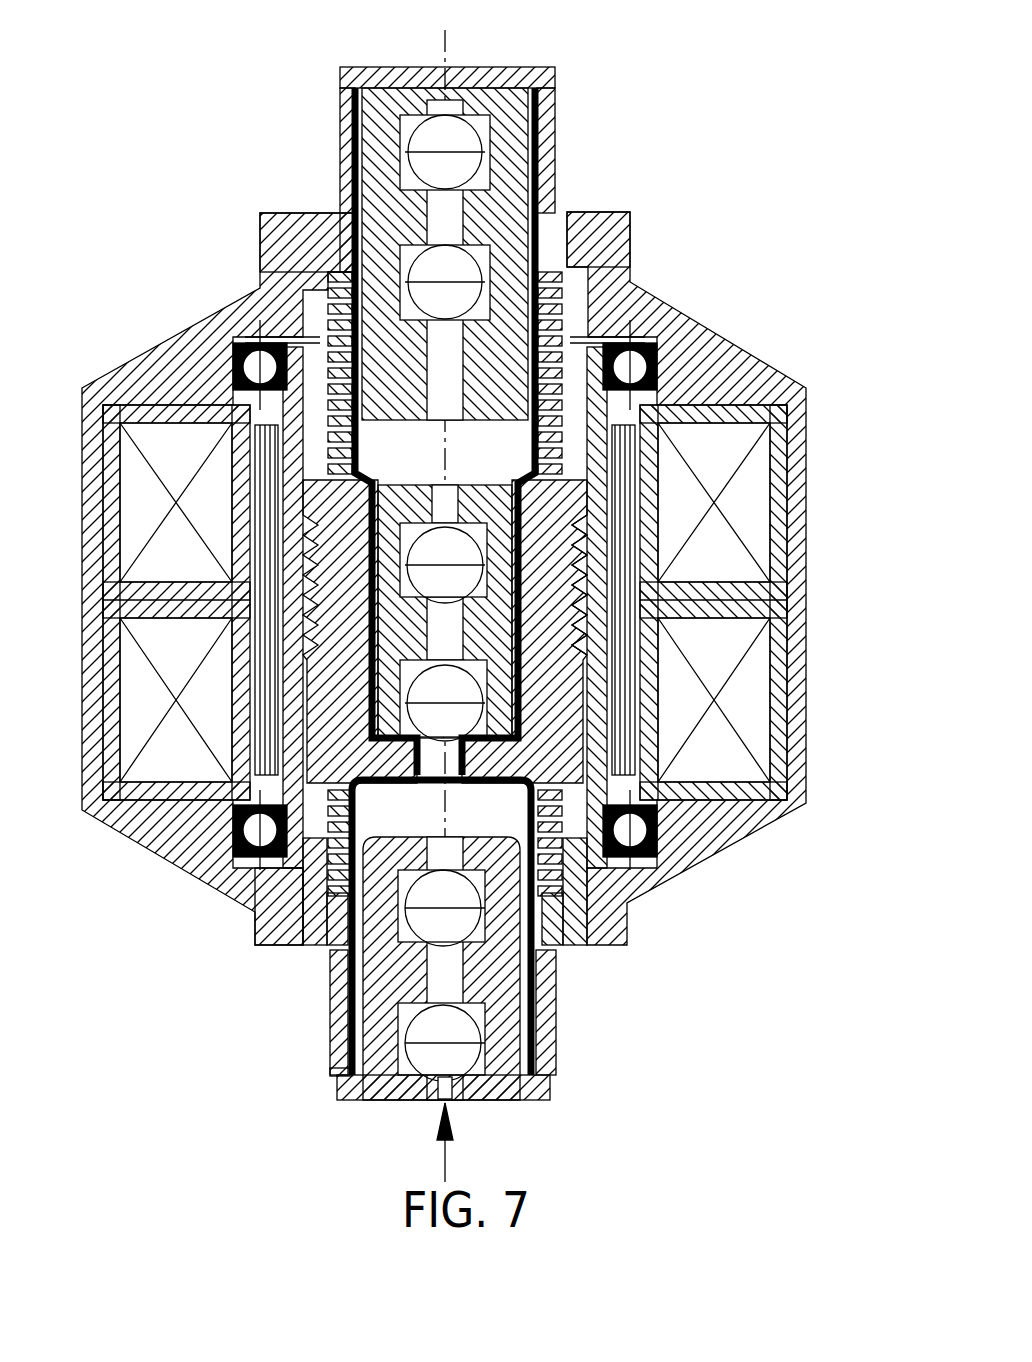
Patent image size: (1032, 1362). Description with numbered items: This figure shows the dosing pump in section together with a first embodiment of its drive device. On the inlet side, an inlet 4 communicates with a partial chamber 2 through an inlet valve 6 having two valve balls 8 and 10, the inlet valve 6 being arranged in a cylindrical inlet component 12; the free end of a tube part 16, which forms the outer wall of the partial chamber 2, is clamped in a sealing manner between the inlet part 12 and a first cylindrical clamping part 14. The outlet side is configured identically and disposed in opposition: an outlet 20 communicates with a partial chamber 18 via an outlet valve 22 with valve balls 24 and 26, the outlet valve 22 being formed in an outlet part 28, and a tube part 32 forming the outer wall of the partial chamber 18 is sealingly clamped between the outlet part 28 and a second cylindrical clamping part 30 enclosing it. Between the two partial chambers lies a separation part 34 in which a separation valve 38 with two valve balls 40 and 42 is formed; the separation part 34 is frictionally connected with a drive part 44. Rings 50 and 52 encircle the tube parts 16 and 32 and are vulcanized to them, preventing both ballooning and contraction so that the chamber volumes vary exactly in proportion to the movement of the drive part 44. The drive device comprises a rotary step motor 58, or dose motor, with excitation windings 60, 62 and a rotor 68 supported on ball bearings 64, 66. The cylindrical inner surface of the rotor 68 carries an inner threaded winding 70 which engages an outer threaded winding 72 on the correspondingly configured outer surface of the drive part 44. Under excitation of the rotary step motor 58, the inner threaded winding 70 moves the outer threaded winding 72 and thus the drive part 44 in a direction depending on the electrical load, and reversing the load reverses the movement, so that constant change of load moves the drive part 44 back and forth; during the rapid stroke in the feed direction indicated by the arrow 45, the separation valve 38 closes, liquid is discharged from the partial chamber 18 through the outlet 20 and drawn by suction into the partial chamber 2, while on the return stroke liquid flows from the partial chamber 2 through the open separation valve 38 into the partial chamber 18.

The partial chamber 2 is at (440, 795).
The inlet 4 is at (447, 1105).
The inlet valve 6 is at (495, 1057).
The valve ball 8 is at (558, 963).
The valve ball 10 is at (465, 1033).
The inlet component 12 is at (552, 1093).
The first cylindrical clamping part 14 is at (335, 1025).
The tube part 16 is at (330, 1090).
The partial chamber 18 is at (440, 458).
The outlet 20 is at (452, 92).
The outlet valve 22 is at (480, 125).
The valve ball 24 is at (465, 163).
The valve ball 26 is at (567, 211).
The outlet part 28 is at (549, 80).
The second cylindrical clamping part 30 is at (340, 118).
The tube part 32 is at (553, 106).
The separation part 34 is at (532, 640).
The separation valve 38 is at (325, 540).
The valve ball 40 is at (443, 563).
The valve ball 42 is at (443, 700).
The drive part 44 is at (532, 722).
The arrow 45 is at (440, 1152).
The ring 50 is at (330, 275).
The ring 52 is at (330, 893).
The rotary step motor 58 is at (795, 385).
The excitation winding 60 is at (753, 498).
The excitation winding 62 is at (753, 693).
The ball bearing 64 is at (663, 357).
The ball bearing 66 is at (660, 853).
The rotor 68 is at (240, 400).
The inner threaded winding 70 is at (602, 497).
The outer threaded winding 72 is at (572, 548).